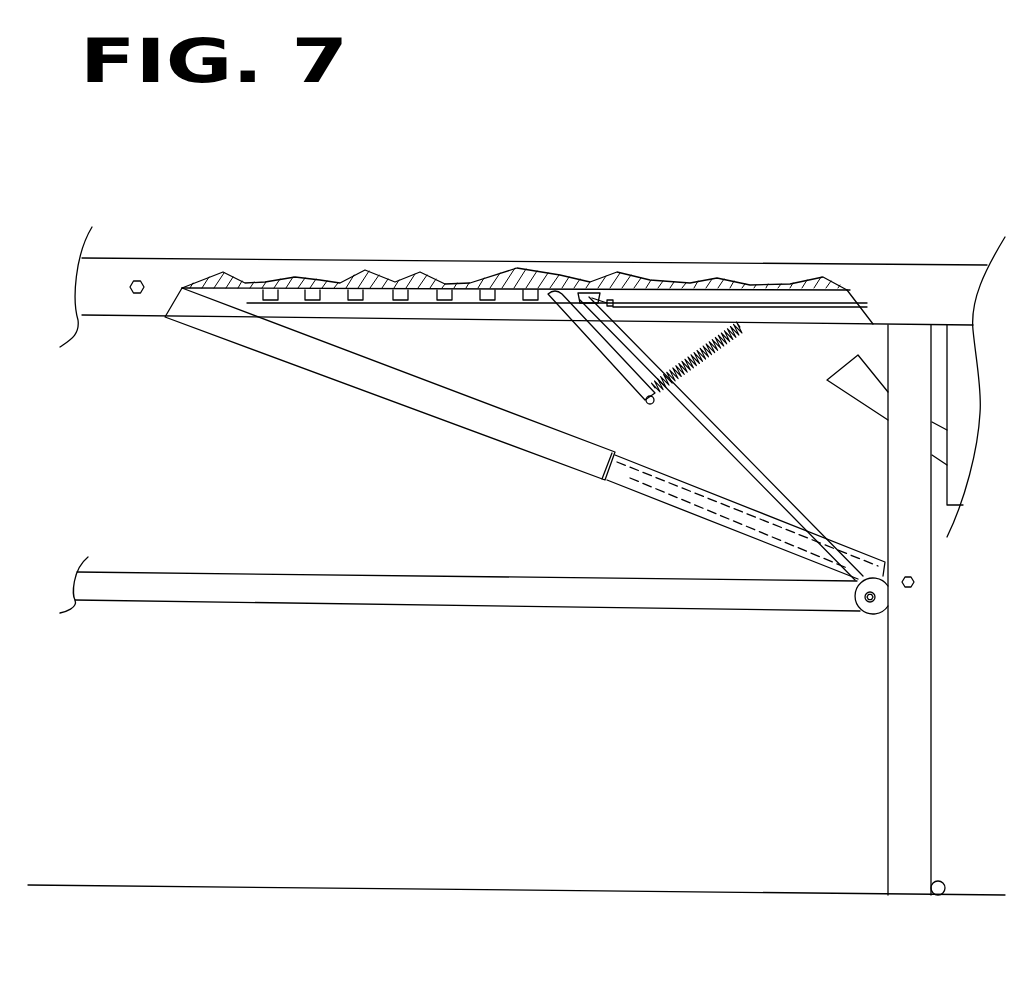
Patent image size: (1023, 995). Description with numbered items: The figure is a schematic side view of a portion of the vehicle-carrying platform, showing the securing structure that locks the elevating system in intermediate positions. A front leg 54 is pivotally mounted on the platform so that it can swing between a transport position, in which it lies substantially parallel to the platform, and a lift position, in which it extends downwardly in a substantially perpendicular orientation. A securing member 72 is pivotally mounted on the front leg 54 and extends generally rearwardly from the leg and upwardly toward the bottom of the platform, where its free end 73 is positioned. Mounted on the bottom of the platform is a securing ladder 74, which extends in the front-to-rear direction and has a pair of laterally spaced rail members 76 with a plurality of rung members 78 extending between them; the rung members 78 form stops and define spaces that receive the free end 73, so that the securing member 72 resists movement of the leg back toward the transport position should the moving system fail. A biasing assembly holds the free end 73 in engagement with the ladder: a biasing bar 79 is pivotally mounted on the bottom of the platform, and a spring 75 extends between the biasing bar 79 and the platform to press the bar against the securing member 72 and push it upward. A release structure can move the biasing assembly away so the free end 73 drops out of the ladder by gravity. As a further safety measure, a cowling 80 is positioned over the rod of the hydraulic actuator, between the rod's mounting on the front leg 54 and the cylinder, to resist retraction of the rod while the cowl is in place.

The front leg 54 is at (912, 672).
The securing member 72 is at (707, 442).
The free end 73 is at (550, 297).
The securing ladder 74 is at (414, 335).
The spring 75 is at (713, 337).
The rail member 76 is at (463, 295).
The rung member 78 is at (362, 288).
The biasing bar 79 is at (600, 336).
The cowling 80 is at (653, 505).